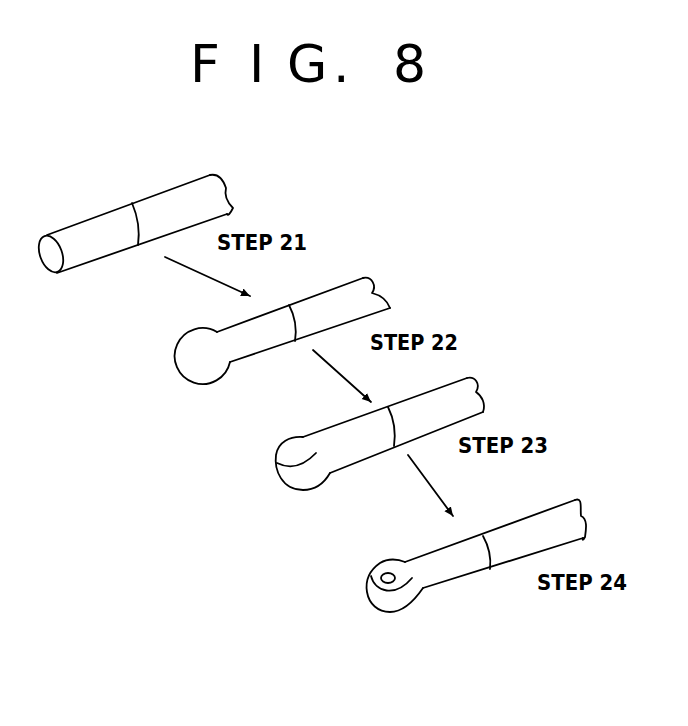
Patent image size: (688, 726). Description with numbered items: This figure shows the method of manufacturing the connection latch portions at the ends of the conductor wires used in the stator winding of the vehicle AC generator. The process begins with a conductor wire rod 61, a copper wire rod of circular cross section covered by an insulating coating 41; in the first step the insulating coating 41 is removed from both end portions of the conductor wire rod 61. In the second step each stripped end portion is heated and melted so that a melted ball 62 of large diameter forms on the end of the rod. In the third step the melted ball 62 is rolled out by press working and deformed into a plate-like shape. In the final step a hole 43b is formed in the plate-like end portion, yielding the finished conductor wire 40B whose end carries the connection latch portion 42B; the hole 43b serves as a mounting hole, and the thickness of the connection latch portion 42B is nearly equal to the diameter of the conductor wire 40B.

The insulating coating 41 is at (198, 193).
The conductor wire rod 61 is at (97, 264).
The melted ball 62 is at (187, 379).
The conductor wire 40B is at (433, 596).
The connection latch portion 42B is at (352, 627).
The hole 43b is at (373, 578).